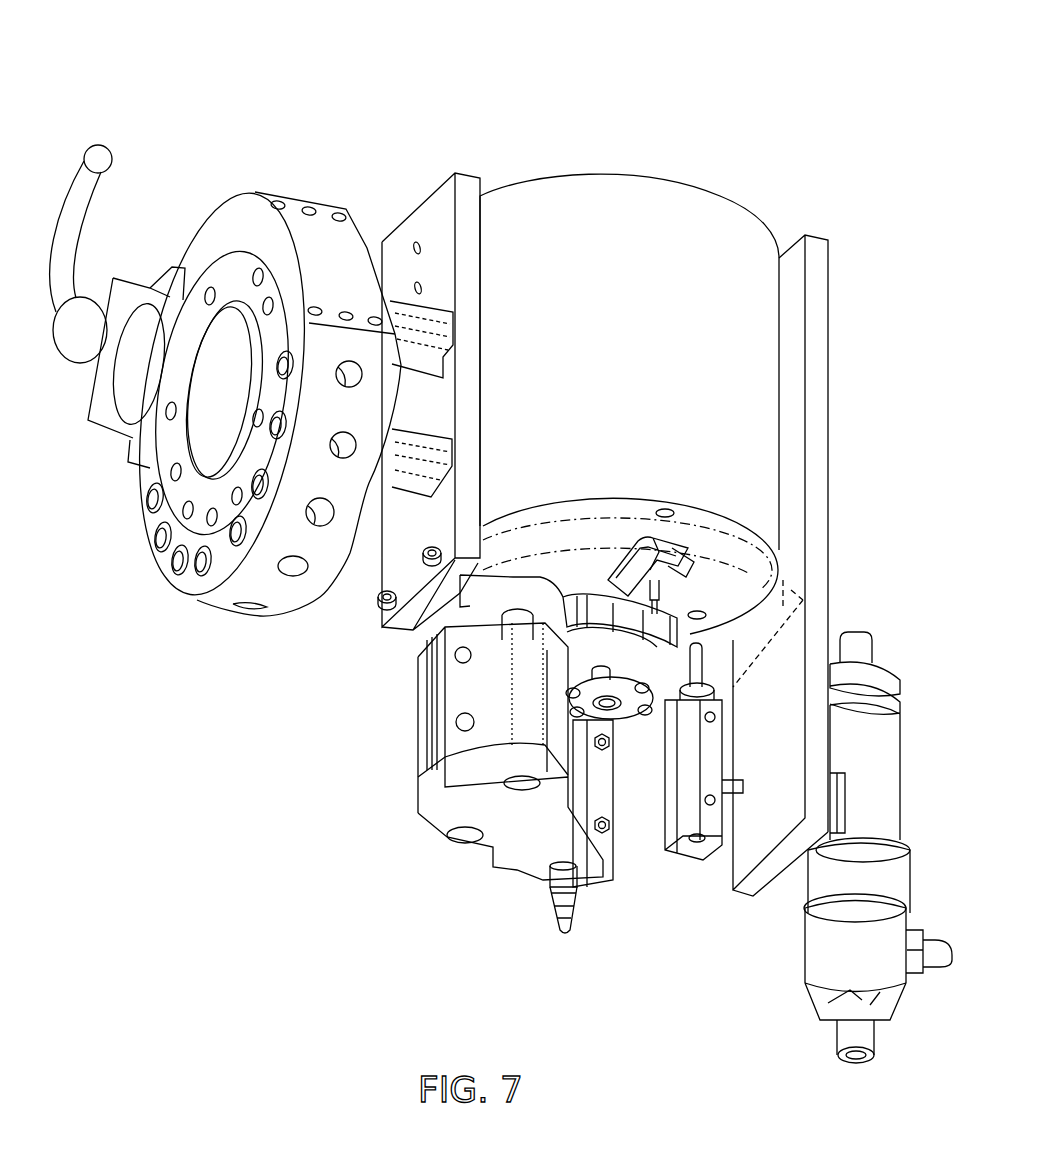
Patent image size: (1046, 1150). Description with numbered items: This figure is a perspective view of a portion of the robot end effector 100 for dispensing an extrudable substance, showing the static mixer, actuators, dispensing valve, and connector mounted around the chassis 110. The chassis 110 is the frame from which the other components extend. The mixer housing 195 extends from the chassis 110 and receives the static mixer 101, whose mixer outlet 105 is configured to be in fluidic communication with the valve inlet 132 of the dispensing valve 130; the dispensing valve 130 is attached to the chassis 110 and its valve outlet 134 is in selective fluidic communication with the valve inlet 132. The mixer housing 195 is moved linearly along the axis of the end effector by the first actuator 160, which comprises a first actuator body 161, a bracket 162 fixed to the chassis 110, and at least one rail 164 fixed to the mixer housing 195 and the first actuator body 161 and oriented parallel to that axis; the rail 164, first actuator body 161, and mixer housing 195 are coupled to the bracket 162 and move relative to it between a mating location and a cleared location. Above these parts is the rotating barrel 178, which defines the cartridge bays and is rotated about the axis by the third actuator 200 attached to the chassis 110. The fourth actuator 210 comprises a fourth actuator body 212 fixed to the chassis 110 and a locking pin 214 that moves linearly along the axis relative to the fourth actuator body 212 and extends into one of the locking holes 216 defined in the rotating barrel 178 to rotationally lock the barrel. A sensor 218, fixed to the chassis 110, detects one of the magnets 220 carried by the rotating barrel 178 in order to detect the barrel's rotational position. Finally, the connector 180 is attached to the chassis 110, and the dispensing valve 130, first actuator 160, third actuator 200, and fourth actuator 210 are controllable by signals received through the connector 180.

The robot end effector 100 is at (392, 97).
The connector 180 is at (225, 197).
The rotating barrel 178 is at (693, 206).
The chassis 110 is at (812, 246).
The magnets 220 is at (572, 522).
The locking holes 216 is at (666, 508).
The sensor 218 is at (676, 590).
The locking pin 214 is at (708, 672).
The fourth actuator 210 is at (712, 818).
The fourth actuator body 212 is at (683, 820).
The third actuator 200 is at (630, 718).
The first actuator 160 is at (458, 687).
The first actuator body 161 is at (458, 722).
The bracket 162 is at (440, 625).
The rail 164 is at (497, 618).
The mixer housing 195 is at (552, 853).
The static mixer 101 is at (557, 866).
The mixer outlet 105 is at (580, 910).
The dispensing valve 130 is at (888, 776).
The valve inlet 132 is at (858, 632).
The valve outlet 134 is at (826, 1034).